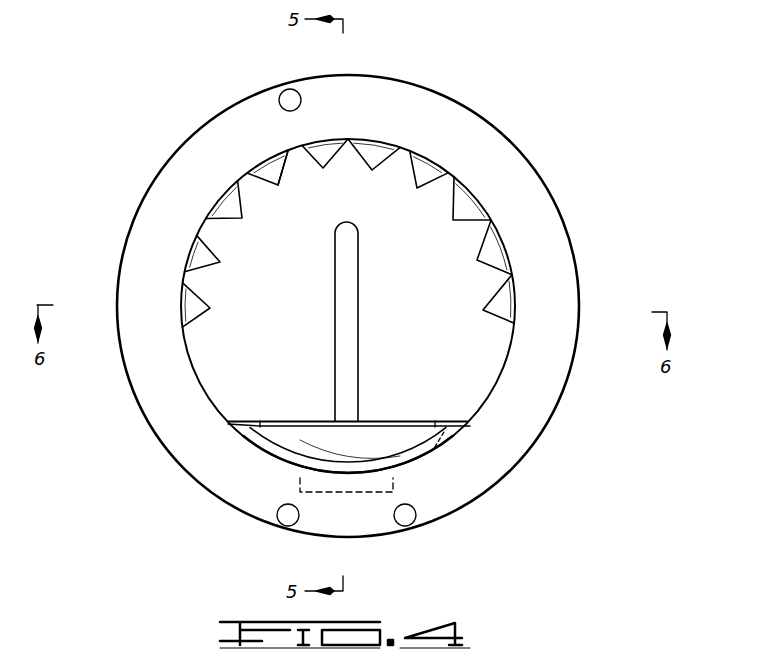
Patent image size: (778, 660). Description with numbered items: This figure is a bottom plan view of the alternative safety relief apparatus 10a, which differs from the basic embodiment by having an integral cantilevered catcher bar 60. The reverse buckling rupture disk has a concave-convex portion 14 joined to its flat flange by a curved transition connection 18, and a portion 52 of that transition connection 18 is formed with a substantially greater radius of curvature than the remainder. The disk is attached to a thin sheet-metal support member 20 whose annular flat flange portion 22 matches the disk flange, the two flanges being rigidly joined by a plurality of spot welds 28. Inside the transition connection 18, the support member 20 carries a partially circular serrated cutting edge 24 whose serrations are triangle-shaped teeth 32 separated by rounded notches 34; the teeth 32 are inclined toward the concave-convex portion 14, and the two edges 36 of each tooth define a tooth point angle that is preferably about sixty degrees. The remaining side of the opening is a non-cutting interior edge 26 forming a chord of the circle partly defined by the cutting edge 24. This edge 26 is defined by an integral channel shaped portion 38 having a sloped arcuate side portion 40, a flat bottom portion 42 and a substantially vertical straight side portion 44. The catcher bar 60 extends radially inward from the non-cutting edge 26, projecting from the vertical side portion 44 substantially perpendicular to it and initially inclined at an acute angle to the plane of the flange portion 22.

The safety relief apparatus 10a is at (557, 117).
The concave-convex portion 14 is at (419, 311).
The curved transition connection 18 is at (265, 455).
The support member 20 is at (435, 84).
The annular flat flange portion 22 is at (462, 127).
The partially circular serrated cutting edge 24 is at (412, 176).
The non-cutting interior edge 26 is at (373, 420).
The spot welds 28 is at (290, 100).
The teeth 32 is at (265, 173).
The rounded notches 34 is at (290, 150).
The tooth edges 36 is at (485, 251).
The channel shaped portion 38 is at (390, 443).
The sloped arcuate side portion 40 is at (433, 447).
The flat bottom portion 42 is at (300, 440).
The vertical straight side portion 44 is at (270, 421).
The portion of the transition connection 52 is at (356, 492).
The cantilevered catcher bar 60 is at (352, 262).